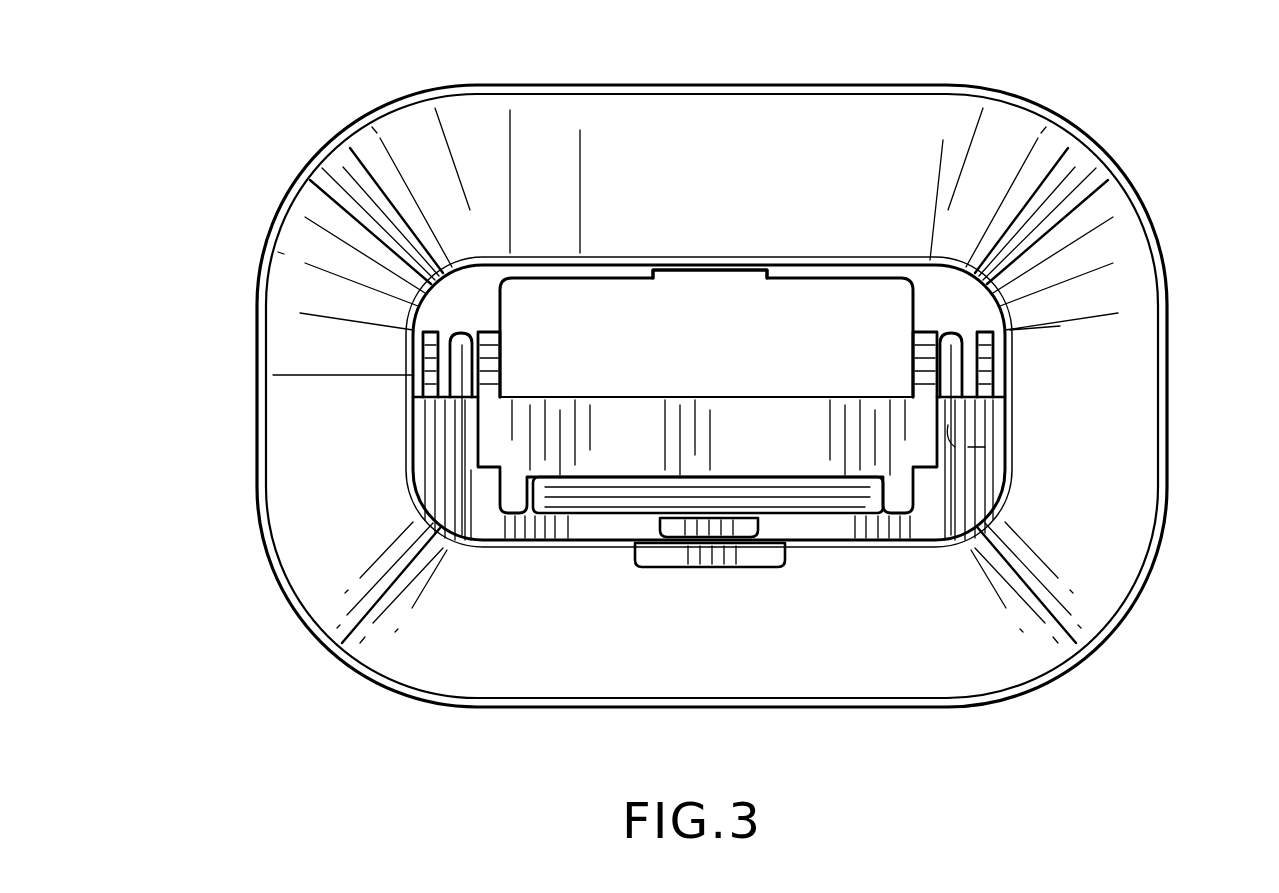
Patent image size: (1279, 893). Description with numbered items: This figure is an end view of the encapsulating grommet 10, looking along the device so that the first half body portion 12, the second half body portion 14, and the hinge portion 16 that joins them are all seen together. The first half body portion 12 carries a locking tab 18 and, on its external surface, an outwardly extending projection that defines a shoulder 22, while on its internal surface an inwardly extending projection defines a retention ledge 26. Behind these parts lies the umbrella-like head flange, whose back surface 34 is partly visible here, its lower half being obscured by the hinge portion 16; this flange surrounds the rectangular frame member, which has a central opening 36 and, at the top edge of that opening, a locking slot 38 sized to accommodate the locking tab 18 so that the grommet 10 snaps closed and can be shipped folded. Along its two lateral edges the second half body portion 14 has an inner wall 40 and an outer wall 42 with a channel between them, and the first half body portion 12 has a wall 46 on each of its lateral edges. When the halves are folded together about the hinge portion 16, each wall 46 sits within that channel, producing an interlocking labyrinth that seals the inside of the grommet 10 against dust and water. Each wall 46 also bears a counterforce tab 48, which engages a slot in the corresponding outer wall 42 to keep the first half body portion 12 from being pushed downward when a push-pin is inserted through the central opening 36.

The encapsulating grommet 10 is at (1150, 86).
The first half body portion 12 is at (980, 470).
The second half body portion 14 is at (1012, 340).
The hinge portion 16 is at (685, 402).
The locking tab 18 is at (677, 527).
The shoulder 22 is at (767, 552).
The retention ledge 26 is at (843, 493).
The back surface 34 is at (278, 301).
The central opening 36 is at (698, 337).
The locking slot 38 is at (715, 272).
The inner wall 40 is at (455, 333).
The outer wall 42 is at (430, 330).
The wall 46 is at (445, 425).
The counterforce tab 48 is at (427, 420).